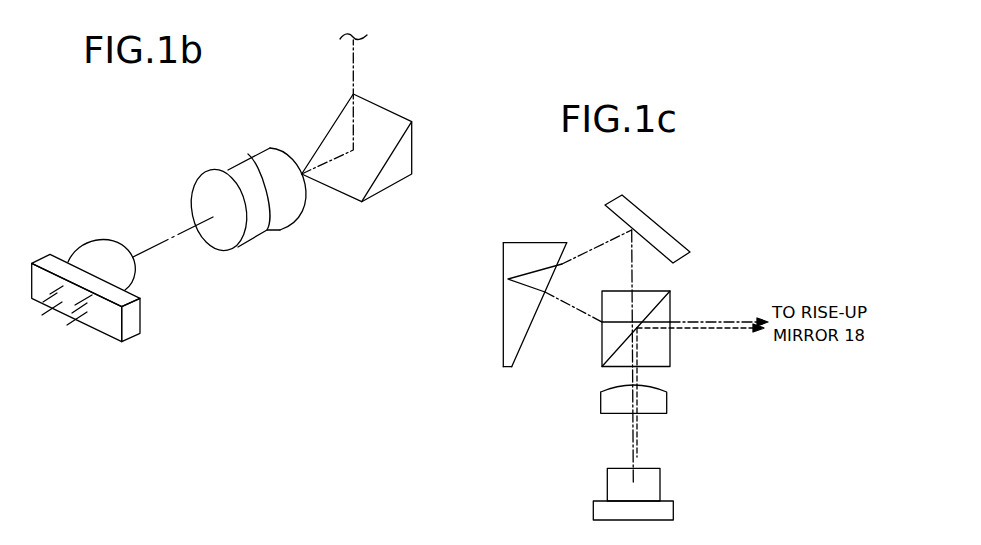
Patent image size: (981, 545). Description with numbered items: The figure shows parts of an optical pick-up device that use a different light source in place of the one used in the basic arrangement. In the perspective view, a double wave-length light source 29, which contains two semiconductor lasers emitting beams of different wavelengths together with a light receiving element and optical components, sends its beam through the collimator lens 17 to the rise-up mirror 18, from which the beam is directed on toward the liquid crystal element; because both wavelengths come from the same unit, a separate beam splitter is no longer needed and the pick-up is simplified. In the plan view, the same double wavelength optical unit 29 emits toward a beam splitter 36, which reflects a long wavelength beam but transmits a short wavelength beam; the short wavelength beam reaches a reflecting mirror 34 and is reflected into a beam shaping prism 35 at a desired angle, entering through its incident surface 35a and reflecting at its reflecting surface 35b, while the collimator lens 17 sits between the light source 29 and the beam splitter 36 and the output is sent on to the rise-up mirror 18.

In FIG. 1b, the collimator lens 17 is at (226, 176).
In FIG. 1c, the collimator lens 17 is at (667, 402).
In FIG. 1b, the rise-up mirror 18 is at (411, 148).
In FIG. 1b, the double wave-length light source 29 is at (93, 251).
In FIG. 1c, the double wave-length light source 29 is at (673, 508).
In FIG. 1c, the reflecting mirror 34 is at (659, 221).
In FIG. 1c, the beam shaping prism 35 is at (503, 282).
In FIG. 1c, the incident surface 35a is at (523, 342).
In FIG. 1c, the reflecting surface 35b is at (503, 290).
In FIG. 1c, the beam splitter 36 is at (671, 345).